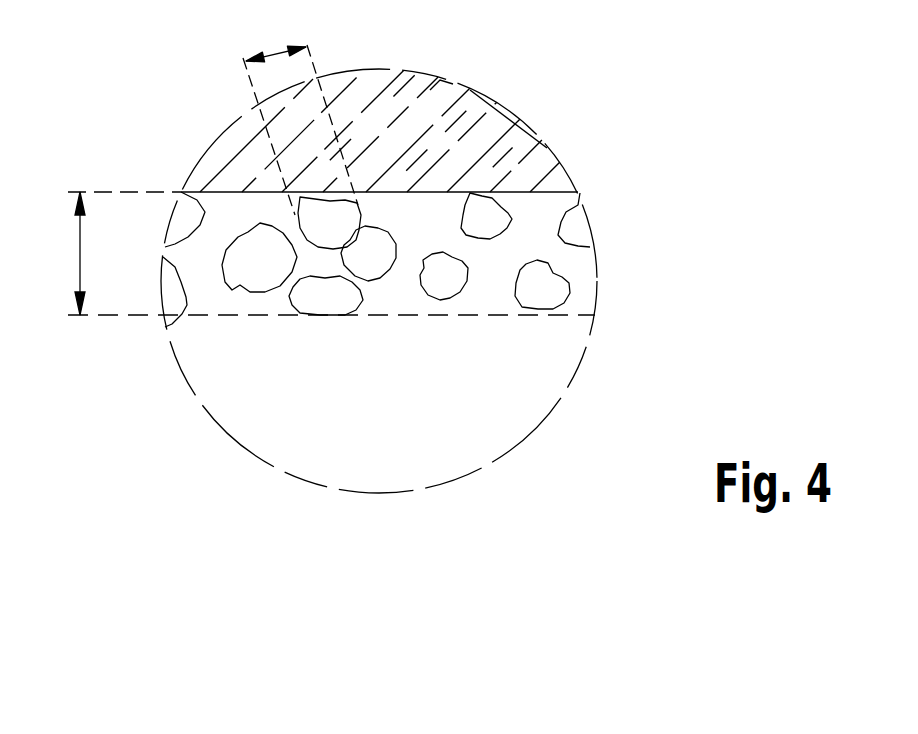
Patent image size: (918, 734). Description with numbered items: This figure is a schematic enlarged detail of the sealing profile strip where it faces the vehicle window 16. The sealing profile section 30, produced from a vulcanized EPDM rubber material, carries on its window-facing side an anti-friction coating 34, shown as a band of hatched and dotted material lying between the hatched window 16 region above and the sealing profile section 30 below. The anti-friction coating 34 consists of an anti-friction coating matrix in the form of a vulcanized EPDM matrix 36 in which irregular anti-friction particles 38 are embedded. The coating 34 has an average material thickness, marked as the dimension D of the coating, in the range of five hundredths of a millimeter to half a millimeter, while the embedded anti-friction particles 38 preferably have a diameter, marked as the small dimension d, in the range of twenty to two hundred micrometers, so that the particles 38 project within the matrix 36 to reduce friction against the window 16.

The window 16 is at (520, 122).
The sealing profile section 30 is at (407, 407).
The anti-friction coating 34 is at (312, 316).
The EPDM matrix 36 is at (379, 300).
The anti-friction particles 38 is at (376, 207).